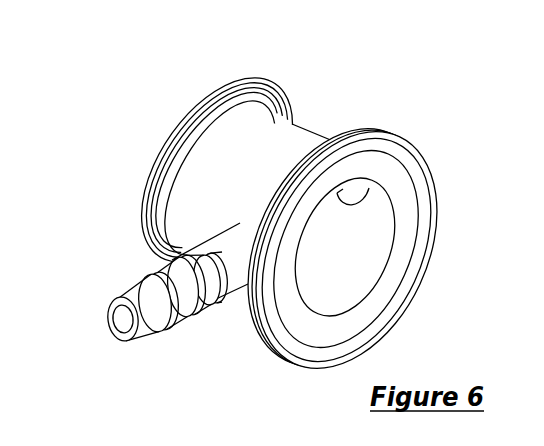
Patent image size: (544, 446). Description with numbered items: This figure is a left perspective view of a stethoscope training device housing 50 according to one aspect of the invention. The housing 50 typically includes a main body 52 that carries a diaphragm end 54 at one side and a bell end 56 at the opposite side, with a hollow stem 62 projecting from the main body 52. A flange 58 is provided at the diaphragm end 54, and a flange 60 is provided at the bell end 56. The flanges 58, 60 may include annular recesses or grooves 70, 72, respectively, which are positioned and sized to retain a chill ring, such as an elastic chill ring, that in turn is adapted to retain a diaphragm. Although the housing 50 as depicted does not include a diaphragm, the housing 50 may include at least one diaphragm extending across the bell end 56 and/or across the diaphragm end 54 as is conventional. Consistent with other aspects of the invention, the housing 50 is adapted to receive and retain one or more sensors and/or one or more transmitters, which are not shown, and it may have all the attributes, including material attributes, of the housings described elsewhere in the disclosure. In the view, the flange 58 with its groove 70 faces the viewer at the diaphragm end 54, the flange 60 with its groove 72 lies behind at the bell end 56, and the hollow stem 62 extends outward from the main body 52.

The stethoscope training device housing 50 is at (296, 212).
The main body 52 is at (288, 140).
The diaphragm end 54 is at (374, 229).
The bell end 56 is at (174, 152).
The flange 58 is at (434, 190).
The flange 60 is at (147, 180).
The hollow stem 62 is at (133, 291).
The annular recess or groove 70 is at (357, 140).
The annular recess or groove 72 is at (212, 97).